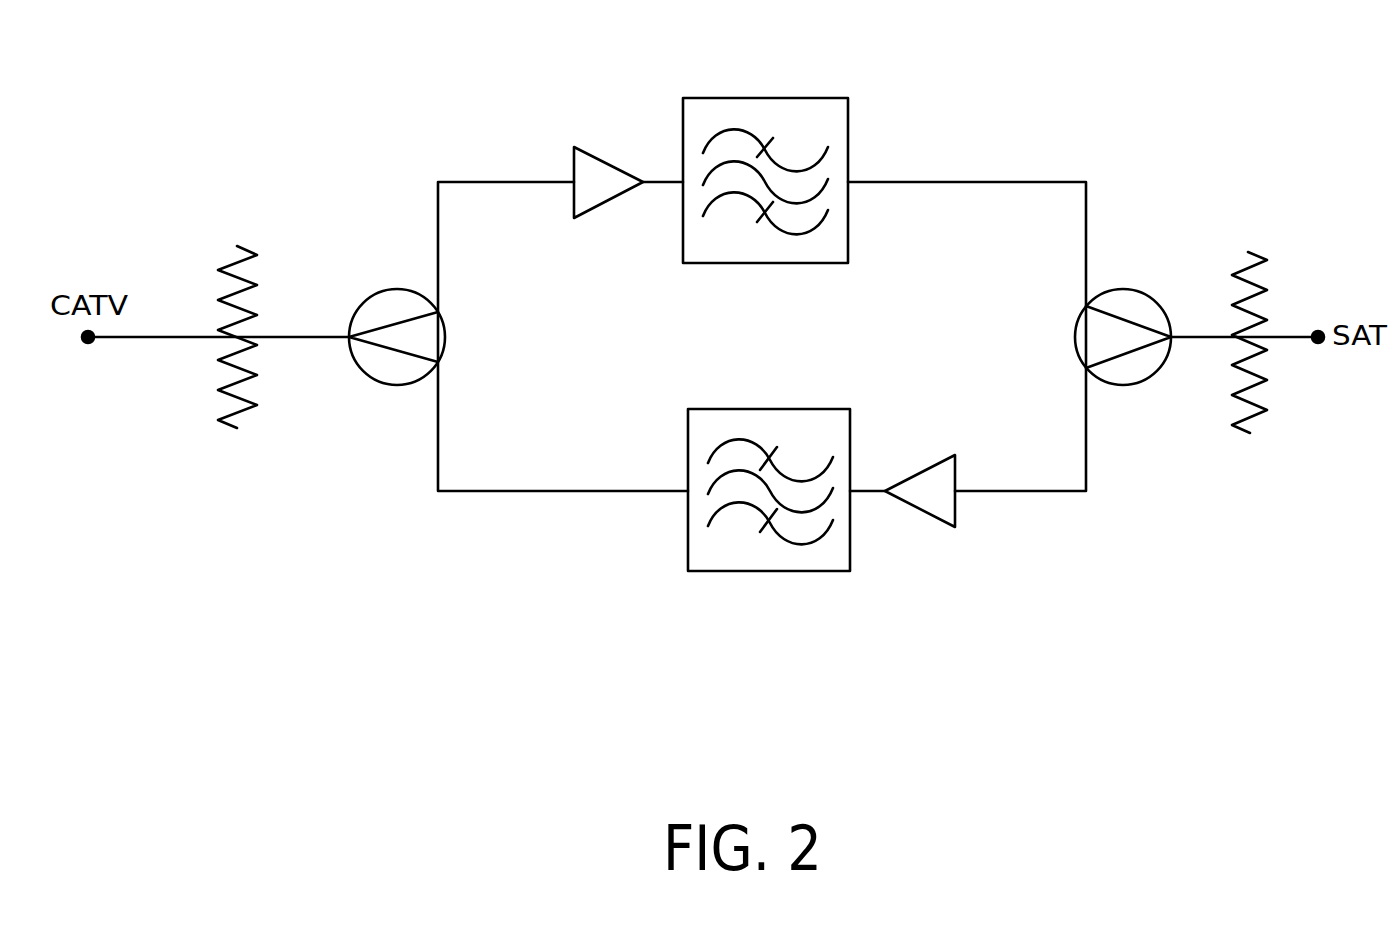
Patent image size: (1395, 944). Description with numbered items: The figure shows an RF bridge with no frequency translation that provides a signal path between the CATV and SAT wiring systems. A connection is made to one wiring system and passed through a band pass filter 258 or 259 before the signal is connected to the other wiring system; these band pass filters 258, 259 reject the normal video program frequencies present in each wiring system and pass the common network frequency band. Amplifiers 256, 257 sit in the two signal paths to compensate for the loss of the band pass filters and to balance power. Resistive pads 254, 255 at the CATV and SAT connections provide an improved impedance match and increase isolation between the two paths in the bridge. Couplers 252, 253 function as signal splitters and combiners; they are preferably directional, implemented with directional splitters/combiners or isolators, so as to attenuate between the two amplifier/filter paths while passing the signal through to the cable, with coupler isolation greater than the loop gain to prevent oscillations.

The coupler 252 is at (387, 390).
The coupler 253 is at (1150, 292).
The resistive pad 254 is at (237, 237).
The resistive pad 255 is at (1258, 252).
The amplifier 256 is at (597, 148).
The amplifier 257 is at (932, 518).
The band pass filter 258 is at (793, 90).
The band pass filter 259 is at (760, 577).